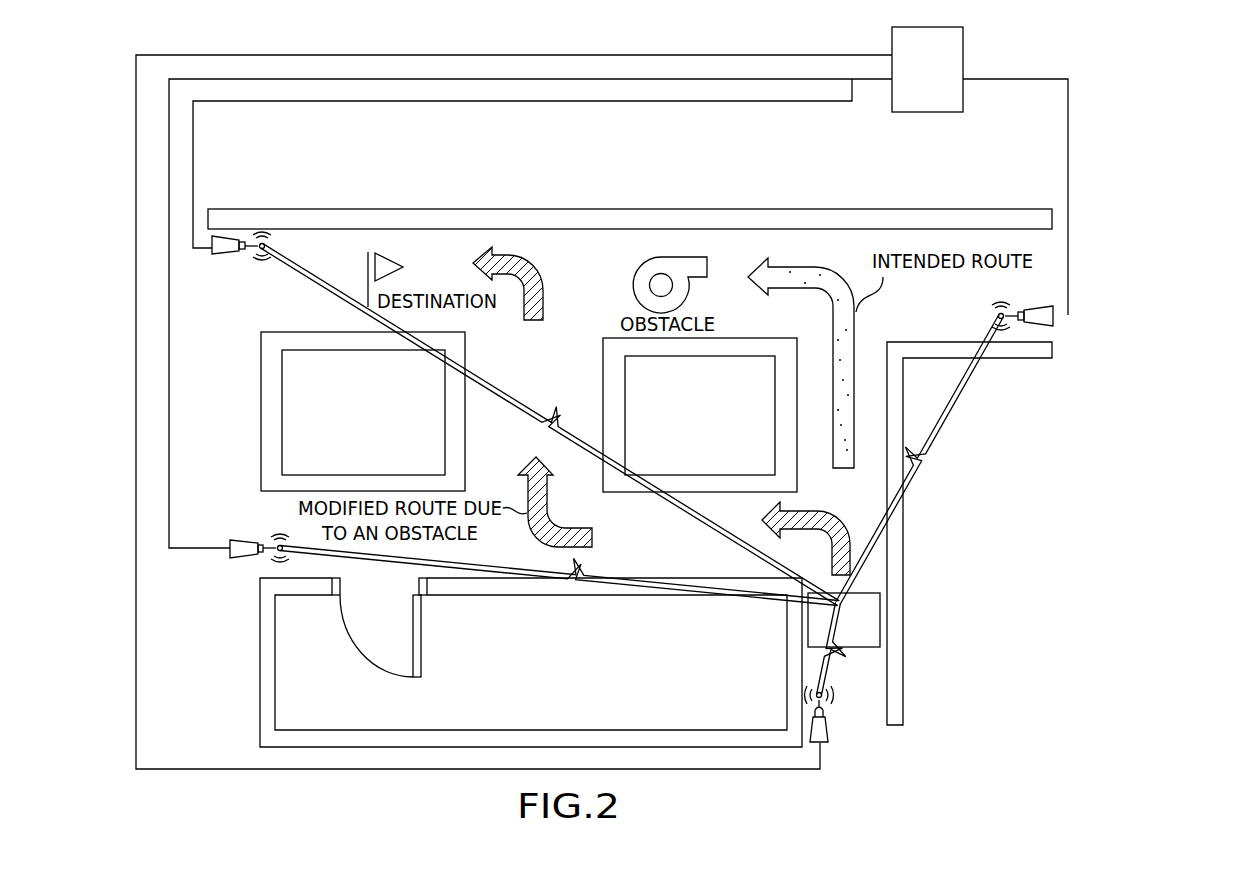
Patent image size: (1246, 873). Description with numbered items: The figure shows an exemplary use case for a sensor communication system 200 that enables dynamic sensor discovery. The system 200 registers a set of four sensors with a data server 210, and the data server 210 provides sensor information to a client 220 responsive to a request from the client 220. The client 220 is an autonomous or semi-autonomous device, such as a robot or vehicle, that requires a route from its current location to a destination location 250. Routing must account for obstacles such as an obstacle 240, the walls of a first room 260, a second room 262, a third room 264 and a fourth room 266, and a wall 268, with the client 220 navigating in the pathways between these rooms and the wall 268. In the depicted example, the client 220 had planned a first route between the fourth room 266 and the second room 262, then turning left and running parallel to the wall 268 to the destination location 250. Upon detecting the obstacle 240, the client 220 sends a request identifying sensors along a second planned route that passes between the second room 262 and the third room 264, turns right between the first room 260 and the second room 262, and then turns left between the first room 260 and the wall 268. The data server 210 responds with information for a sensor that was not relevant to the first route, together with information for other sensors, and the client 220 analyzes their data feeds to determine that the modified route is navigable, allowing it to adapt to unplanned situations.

The sensor communication system 200 is at (1108, 101).
The data server 210 is at (963, 53).
The client 220 is at (882, 619).
The obstacle 240 is at (650, 255).
The destination location 250 is at (387, 253).
The first room 260 is at (280, 387).
The second room 262 is at (625, 392).
The third room 264 is at (277, 665).
The fourth room 266 is at (1010, 502).
The wall 268 is at (695, 211).